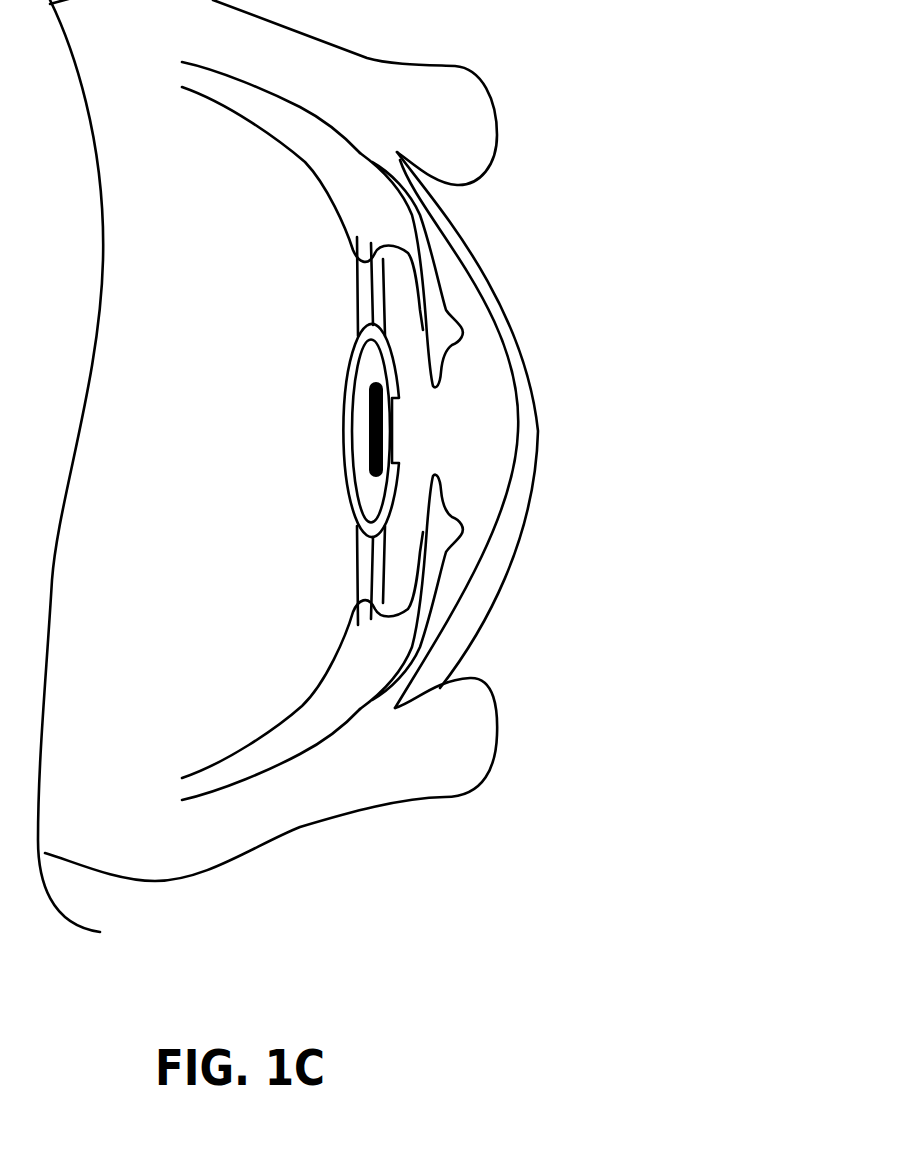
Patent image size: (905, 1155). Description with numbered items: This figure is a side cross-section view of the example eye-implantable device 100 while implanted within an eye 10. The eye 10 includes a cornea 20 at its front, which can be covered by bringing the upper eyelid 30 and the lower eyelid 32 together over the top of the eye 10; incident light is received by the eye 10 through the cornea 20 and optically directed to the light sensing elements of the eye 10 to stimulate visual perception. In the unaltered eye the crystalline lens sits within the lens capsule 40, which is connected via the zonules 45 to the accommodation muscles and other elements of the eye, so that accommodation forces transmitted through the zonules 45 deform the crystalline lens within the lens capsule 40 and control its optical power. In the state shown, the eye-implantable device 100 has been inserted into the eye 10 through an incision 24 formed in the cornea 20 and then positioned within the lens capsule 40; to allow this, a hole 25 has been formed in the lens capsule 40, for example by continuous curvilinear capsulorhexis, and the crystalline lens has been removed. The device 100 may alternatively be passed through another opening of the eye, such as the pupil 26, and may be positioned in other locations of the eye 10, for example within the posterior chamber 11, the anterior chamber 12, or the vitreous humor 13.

The eye 10 is at (347, 843).
The posterior chamber 11 is at (393, 337).
The anterior chamber 12 is at (477, 309).
The vitreous humor 13 is at (162, 488).
The cornea 20 is at (528, 478).
The incision 24 is at (510, 320).
The hole 25 is at (403, 430).
The pupil 26 is at (447, 408).
The upper eyelid 30 is at (496, 103).
The lower eyelid 32 is at (496, 717).
The lens capsule 40 is at (355, 352).
The zonules 45 is at (353, 278).
The eye-implantable device 100 is at (372, 427).